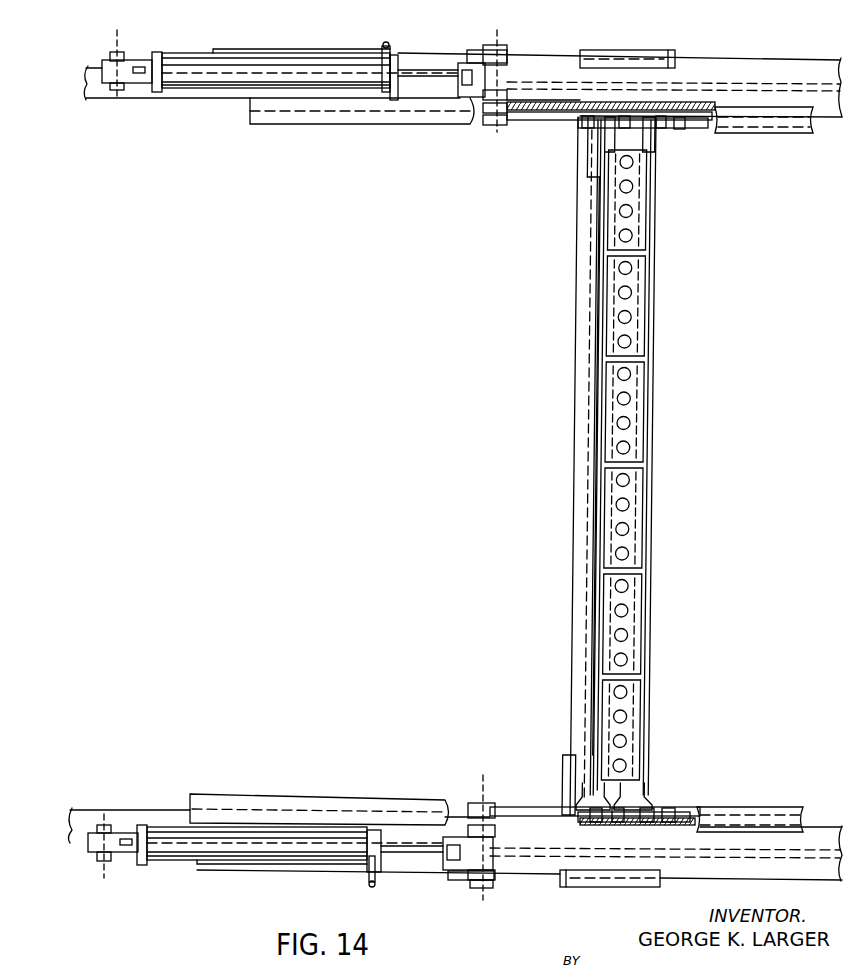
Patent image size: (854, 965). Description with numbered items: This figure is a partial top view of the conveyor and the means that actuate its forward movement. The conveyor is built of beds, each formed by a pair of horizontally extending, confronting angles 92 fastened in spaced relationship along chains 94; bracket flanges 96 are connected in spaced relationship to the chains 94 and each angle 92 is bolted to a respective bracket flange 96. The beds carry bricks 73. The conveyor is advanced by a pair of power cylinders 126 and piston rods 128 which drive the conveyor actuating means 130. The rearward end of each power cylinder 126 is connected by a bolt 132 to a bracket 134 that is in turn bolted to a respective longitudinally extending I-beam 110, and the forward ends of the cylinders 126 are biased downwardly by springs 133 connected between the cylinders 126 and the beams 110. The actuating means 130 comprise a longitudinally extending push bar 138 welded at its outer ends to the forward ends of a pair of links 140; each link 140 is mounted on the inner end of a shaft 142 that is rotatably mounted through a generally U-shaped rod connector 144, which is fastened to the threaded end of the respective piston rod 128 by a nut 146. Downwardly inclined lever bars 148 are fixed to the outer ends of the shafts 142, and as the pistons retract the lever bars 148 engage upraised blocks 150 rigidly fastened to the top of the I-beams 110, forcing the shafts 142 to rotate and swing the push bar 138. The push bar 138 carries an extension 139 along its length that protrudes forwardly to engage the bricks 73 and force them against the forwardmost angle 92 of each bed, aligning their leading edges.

The I-beam 110 is at (730, 868).
The power cylinder 126 is at (252, 62).
The piston rod 128 is at (422, 857).
The conveyor actuating means 130 is at (576, 313).
The bolt 132 is at (123, 56).
The spring 133 is at (383, 43).
The bracket 134 is at (143, 83).
The push bar 138 is at (572, 775).
The extension 139 is at (582, 412).
The link 140 is at (515, 125).
The shaft 142 is at (500, 47).
The U-shaped rod connector 144 is at (460, 837).
The nut 146 is at (462, 78).
The lever bar 148 is at (472, 50).
The upraised block 150 is at (600, 50).
The brick 73 is at (636, 519).
The angle 92 is at (604, 150).
The chain 94 is at (710, 130).
The bracket flange 96 is at (600, 132).